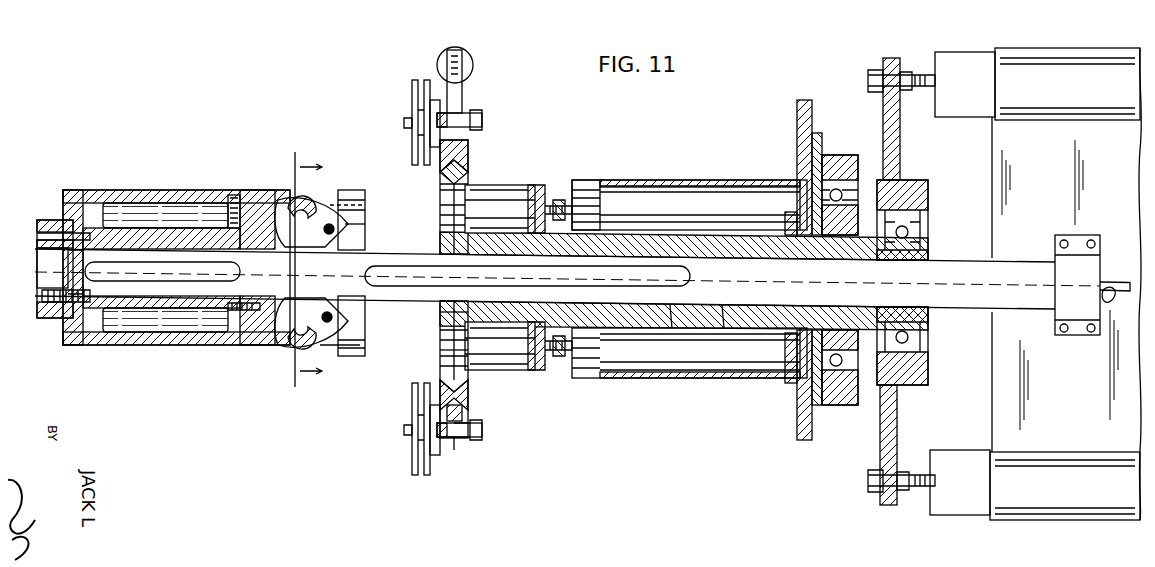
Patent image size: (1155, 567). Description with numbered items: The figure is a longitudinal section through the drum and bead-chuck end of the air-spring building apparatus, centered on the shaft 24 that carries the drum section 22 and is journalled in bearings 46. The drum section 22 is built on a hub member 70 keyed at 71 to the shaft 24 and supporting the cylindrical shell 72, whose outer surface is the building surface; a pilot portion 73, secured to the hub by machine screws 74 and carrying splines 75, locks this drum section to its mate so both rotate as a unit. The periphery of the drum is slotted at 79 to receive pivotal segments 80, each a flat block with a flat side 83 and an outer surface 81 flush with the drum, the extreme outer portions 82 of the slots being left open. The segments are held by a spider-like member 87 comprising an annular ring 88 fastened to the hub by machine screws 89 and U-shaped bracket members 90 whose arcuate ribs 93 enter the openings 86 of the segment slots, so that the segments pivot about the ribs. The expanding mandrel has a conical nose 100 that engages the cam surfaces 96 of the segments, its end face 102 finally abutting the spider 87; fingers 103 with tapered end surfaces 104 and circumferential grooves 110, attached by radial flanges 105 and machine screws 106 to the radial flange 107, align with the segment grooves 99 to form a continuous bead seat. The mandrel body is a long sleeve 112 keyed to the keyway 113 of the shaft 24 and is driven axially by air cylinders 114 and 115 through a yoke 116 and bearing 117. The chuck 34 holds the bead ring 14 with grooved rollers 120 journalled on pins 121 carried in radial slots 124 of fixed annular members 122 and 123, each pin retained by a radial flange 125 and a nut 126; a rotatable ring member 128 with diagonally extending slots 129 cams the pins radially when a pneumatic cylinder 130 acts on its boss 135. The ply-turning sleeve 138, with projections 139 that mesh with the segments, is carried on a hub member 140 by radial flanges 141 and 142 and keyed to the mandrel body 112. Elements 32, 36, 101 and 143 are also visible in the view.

The bead ring 14 is at (298, 167).
The drum section 22 is at (128, 190).
The shaft 24 is at (960, 268).
The upper plate assembly 32 is at (535, 185).
The chuck 34 is at (432, 356).
The upper motor 36 is at (673, 176).
The bearings 46 is at (1058, 270).
The hub member 70 is at (112, 345).
The key 71 is at (135, 268).
The cylindrical shell 72 is at (185, 203).
The pilot portion 73 is at (37, 286).
The machine screws 74 is at (40, 296).
The splines 75 is at (52, 318).
The slots 79 is at (345, 195).
The pivotal segments 80 is at (348, 230).
The outer surface 81 is at (300, 200).
The extreme outer portions 82 is at (340, 200).
The flat side 83 is at (345, 222).
The opening 86 is at (285, 205).
The spider-like member 87 is at (250, 192).
The annular ring 88 is at (252, 340).
The machine screws 89 is at (228, 316).
The bracket members 90 is at (340, 350).
The arcuate rib 93 is at (297, 340).
The cam surfaces 96 is at (340, 308).
The grooves 99 is at (330, 350).
The conical nose 100 is at (452, 312).
The lower motor 101 is at (652, 340).
The end face 102 is at (445, 312).
The fingers 103 is at (496, 346).
The tapered end surfaces 104 is at (445, 236).
The radial flanges 105 is at (540, 360).
The machine screws 106 is at (558, 352).
The radial flange 107 is at (566, 358).
The circumferential grooves 110 is at (480, 192).
The sleeve 112 is at (722, 304).
The keyway 113 is at (675, 300).
The air cylinder 114 is at (1098, 58).
The air cylinder 115 is at (1063, 512).
The yoke 116 is at (893, 426).
The bearing 117 is at (910, 338).
The grooved rollers 120 is at (412, 103).
The pins 121 is at (454, 437).
The annular member 122 is at (440, 388).
The annular member 123 is at (468, 398).
The radial slots 124 is at (468, 416).
The radial flange 125 is at (448, 445).
The nut 126 is at (470, 432).
The ring member 128 is at (462, 156).
The diagonally extending slots 129 is at (466, 118).
The pneumatic cylinder 130 is at (468, 58).
The boss 135 is at (447, 70).
The ply-turning sleeve 138 is at (718, 180).
The projections 139 is at (580, 180).
The hub member 140 is at (785, 222).
The radial flange 141 is at (795, 188).
The radial flange 142 is at (822, 148).
The plate 143 is at (797, 128).